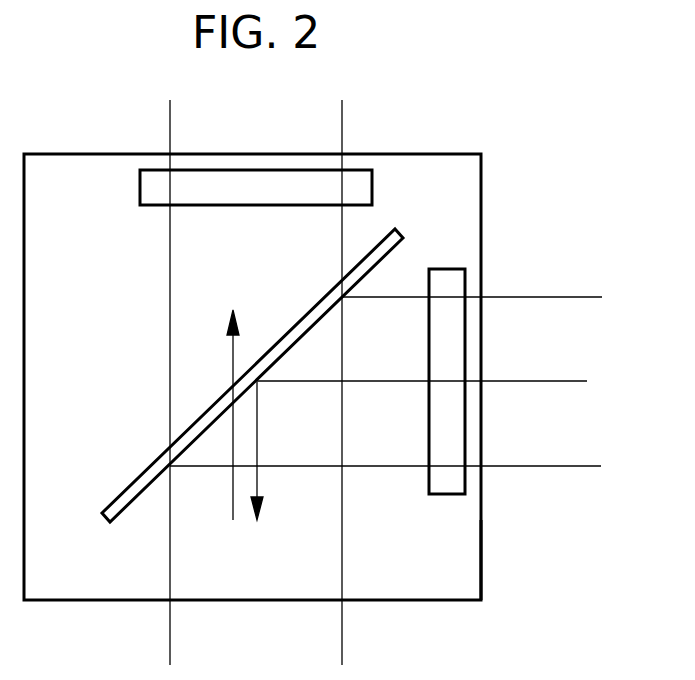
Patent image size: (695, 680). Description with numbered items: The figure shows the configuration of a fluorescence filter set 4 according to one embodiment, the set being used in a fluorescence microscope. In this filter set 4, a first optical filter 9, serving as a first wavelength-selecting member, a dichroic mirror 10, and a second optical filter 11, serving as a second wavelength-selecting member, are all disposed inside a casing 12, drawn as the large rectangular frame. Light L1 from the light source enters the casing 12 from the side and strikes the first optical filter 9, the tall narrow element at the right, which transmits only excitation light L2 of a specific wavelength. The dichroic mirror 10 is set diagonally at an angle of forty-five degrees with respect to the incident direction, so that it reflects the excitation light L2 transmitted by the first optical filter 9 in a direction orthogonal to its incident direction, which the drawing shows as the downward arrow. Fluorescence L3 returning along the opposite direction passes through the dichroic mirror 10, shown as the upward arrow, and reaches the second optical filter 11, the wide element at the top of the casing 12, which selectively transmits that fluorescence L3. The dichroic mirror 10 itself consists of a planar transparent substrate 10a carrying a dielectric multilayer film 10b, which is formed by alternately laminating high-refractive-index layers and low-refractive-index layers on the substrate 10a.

The fluorescence filter set 4 is at (483, 179).
The first optical filter 9 is at (465, 434).
The dichroic mirror 10 is at (404, 231).
The planar transparent substrate 10a is at (132, 482).
The dielectric multilayer film 10b is at (123, 522).
The second optical filter 11 is at (362, 170).
The casing 12 is at (482, 576).
The light L1 is at (587, 297).
The excitation light L2 is at (258, 483).
The fluorescence L3 is at (232, 493).